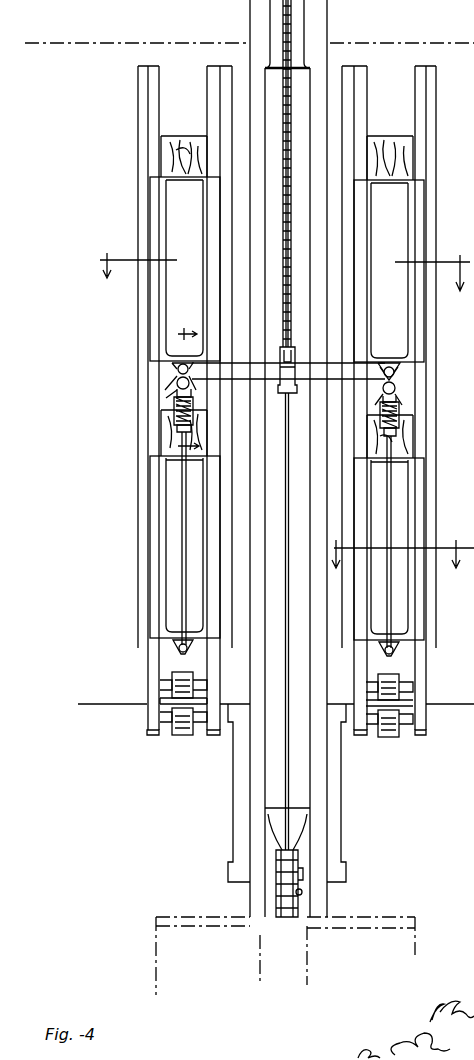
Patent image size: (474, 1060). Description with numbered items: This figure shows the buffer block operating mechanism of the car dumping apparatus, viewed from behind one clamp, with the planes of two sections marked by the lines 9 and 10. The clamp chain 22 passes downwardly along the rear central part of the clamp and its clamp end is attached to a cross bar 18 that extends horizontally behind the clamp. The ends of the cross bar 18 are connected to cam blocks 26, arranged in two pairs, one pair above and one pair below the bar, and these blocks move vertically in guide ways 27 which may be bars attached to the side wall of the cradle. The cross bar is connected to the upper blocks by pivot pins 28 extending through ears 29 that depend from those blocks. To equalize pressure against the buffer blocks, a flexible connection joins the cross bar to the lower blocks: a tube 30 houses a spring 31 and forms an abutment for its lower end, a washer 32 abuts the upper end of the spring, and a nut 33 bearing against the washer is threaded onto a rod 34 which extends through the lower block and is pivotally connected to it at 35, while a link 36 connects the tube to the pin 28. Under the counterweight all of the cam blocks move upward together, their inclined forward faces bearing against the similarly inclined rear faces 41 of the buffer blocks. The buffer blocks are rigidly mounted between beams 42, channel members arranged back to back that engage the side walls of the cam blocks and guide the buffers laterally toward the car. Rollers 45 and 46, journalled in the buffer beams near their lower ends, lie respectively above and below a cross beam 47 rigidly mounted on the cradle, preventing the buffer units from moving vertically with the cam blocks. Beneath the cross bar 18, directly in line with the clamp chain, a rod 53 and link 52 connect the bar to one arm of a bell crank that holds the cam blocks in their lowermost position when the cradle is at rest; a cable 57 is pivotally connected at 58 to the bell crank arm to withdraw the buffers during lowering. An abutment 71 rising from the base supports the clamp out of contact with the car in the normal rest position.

The section line 9- 9 is at (285, 282).
The section line 10- 10 is at (400, 565).
The cross bar 18 is at (288, 371).
The clamp chain 22 is at (294, 34).
The cam blocks 26 is at (176, 230).
The guide ways 27 is at (148, 116).
The pivot pins 28 is at (178, 374).
The ears 29 is at (176, 366).
The tube 30 is at (178, 414).
The spring 31 is at (400, 402).
The washer 32 is at (382, 374).
The nut 33 is at (396, 394).
The rod 34 is at (184, 500).
The pivotal connection 35 is at (178, 648).
The link 36 is at (178, 390).
The rear faces of the buffer blocks 41 is at (174, 164).
The beams 42 is at (146, 738).
The roller 45 is at (176, 678).
The roller 46 is at (182, 736).
The cross beam 47 is at (164, 716).
The link 52 is at (284, 870).
The rod 53 is at (290, 806).
The cable 57 is at (304, 880).
The pivotal connection 58 is at (302, 892).
The abutment 71 is at (170, 918).